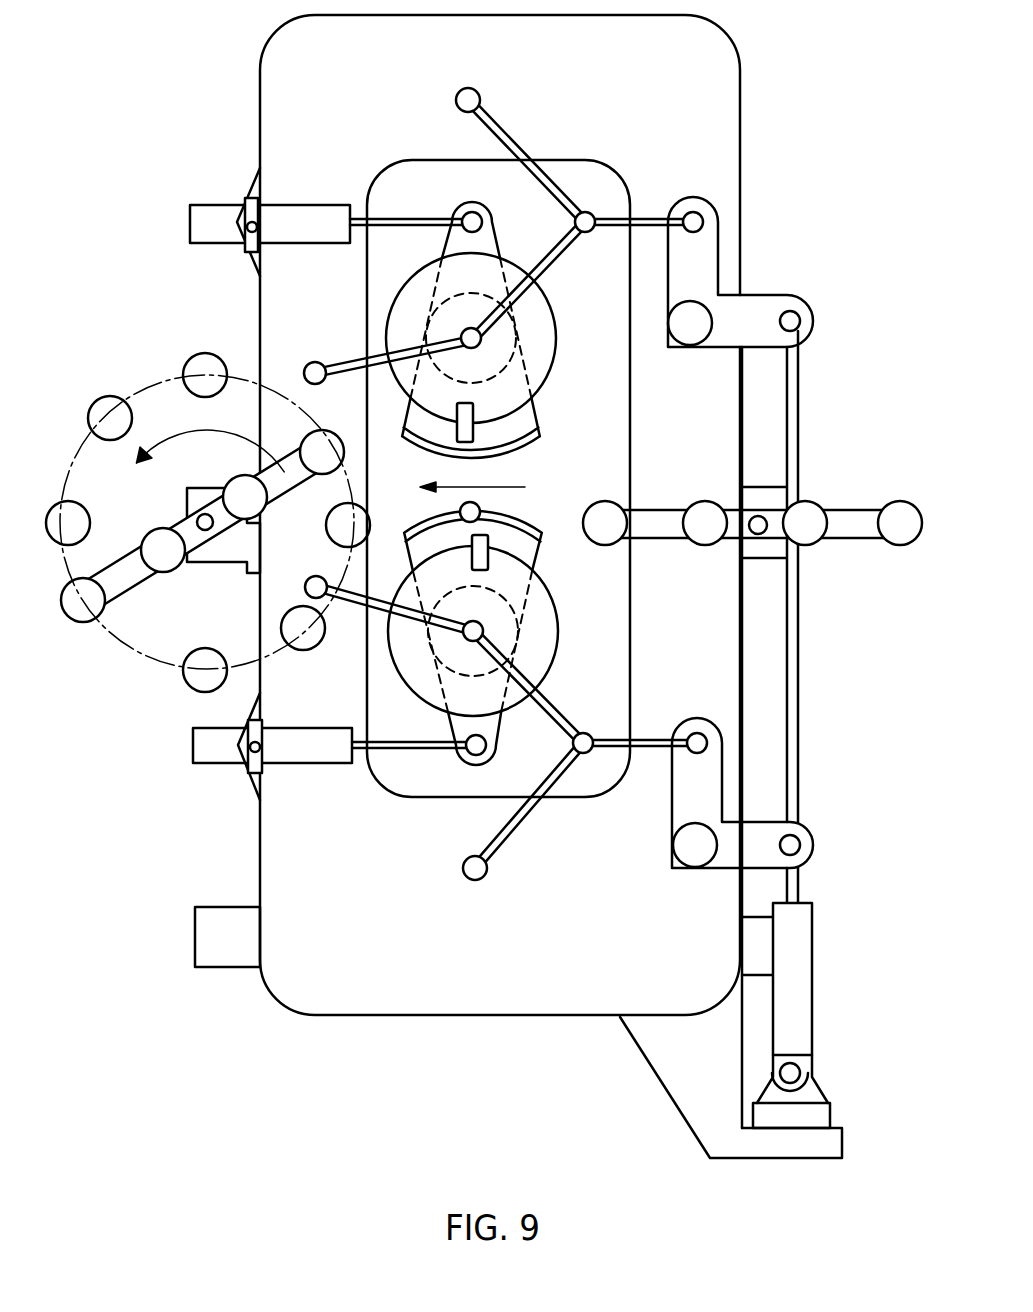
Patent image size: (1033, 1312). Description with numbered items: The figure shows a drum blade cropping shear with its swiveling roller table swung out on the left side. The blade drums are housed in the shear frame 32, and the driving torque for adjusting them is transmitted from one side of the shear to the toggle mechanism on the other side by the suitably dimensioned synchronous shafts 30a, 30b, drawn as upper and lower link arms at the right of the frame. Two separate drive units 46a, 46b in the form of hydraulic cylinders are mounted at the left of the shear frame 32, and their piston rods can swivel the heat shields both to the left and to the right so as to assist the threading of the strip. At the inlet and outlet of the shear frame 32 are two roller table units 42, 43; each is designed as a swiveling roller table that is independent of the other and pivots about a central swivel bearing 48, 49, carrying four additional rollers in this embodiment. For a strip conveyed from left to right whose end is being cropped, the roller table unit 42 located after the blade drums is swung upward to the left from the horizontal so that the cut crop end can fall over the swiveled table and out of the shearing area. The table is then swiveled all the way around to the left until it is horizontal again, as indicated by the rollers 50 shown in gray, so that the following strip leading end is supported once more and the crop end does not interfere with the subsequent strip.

The shear frame 32 is at (532, 947).
The drive unit 46a is at (218, 213).
The drive unit 46b is at (217, 752).
The central swivel bearing 48 is at (208, 545).
The roller table unit 42 is at (123, 575).
The rollers 50 is at (203, 372).
The synchronous shaft 30a is at (703, 317).
The synchronous shaft 30b is at (703, 840).
The roller table unit 43 is at (860, 510).
The central swivel bearing 49 is at (758, 530).